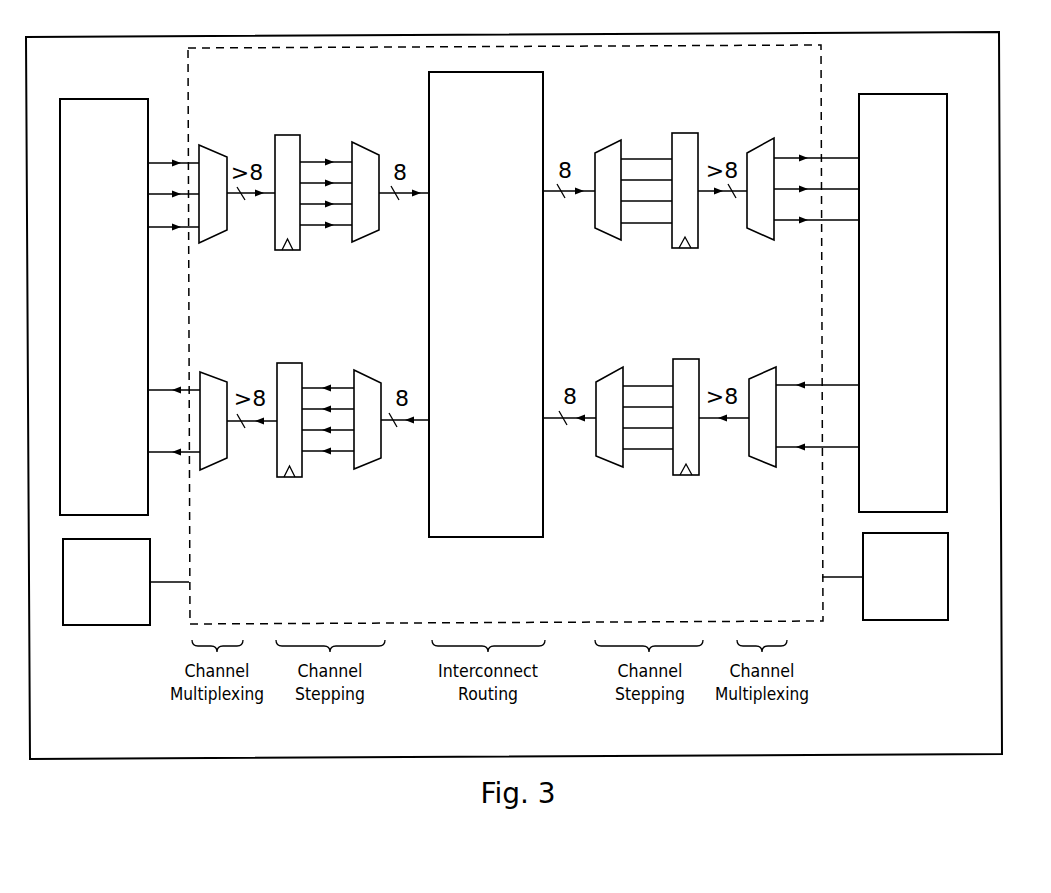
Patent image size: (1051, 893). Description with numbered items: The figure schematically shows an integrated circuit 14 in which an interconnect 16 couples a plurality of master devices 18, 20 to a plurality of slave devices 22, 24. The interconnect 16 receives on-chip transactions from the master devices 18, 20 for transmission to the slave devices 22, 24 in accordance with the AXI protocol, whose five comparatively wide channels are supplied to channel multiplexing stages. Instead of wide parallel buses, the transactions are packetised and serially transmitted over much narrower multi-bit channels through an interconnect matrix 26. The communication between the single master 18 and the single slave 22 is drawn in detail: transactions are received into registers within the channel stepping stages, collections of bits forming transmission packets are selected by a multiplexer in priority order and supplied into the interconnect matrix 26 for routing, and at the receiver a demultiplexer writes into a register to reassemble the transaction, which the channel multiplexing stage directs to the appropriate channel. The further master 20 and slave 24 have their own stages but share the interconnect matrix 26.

The integrated circuit 14 is at (999, 70).
The interconnect 16 is at (821, 67).
The master device 18 is at (103, 99).
The master device 20 is at (105, 625).
The slave device 22 is at (900, 93).
The slave device 24 is at (905, 620).
The interconnect matrix 26 is at (490, 537).